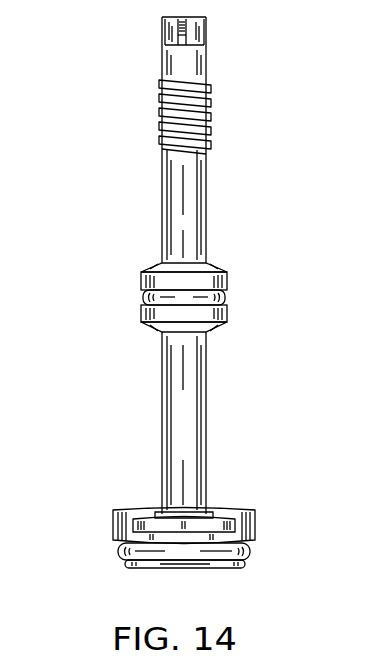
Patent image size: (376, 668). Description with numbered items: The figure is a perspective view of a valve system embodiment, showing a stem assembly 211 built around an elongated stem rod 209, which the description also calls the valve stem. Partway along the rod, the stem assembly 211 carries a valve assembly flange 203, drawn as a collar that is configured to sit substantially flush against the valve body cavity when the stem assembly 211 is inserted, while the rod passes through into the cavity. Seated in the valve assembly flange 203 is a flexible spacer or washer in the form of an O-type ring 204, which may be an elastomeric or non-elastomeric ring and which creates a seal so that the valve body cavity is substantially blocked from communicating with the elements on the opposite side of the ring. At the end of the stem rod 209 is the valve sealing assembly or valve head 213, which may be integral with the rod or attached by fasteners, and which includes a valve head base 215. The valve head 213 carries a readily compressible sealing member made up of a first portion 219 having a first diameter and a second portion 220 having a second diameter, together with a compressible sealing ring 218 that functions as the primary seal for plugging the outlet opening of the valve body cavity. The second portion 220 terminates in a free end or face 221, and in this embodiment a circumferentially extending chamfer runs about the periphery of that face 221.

The stem assembly 211 is at (254, 88).
The stem rod 209 is at (161, 183).
The valve assembly flange 203 is at (230, 262).
The O-type ring 204 is at (143, 298).
The valve head 213 is at (104, 498).
The valve head base 215 is at (208, 527).
The first portion 219 is at (256, 520).
The sealing ring 218 is at (249, 558).
The second portion 220 is at (244, 566).
The face 221 is at (209, 568).